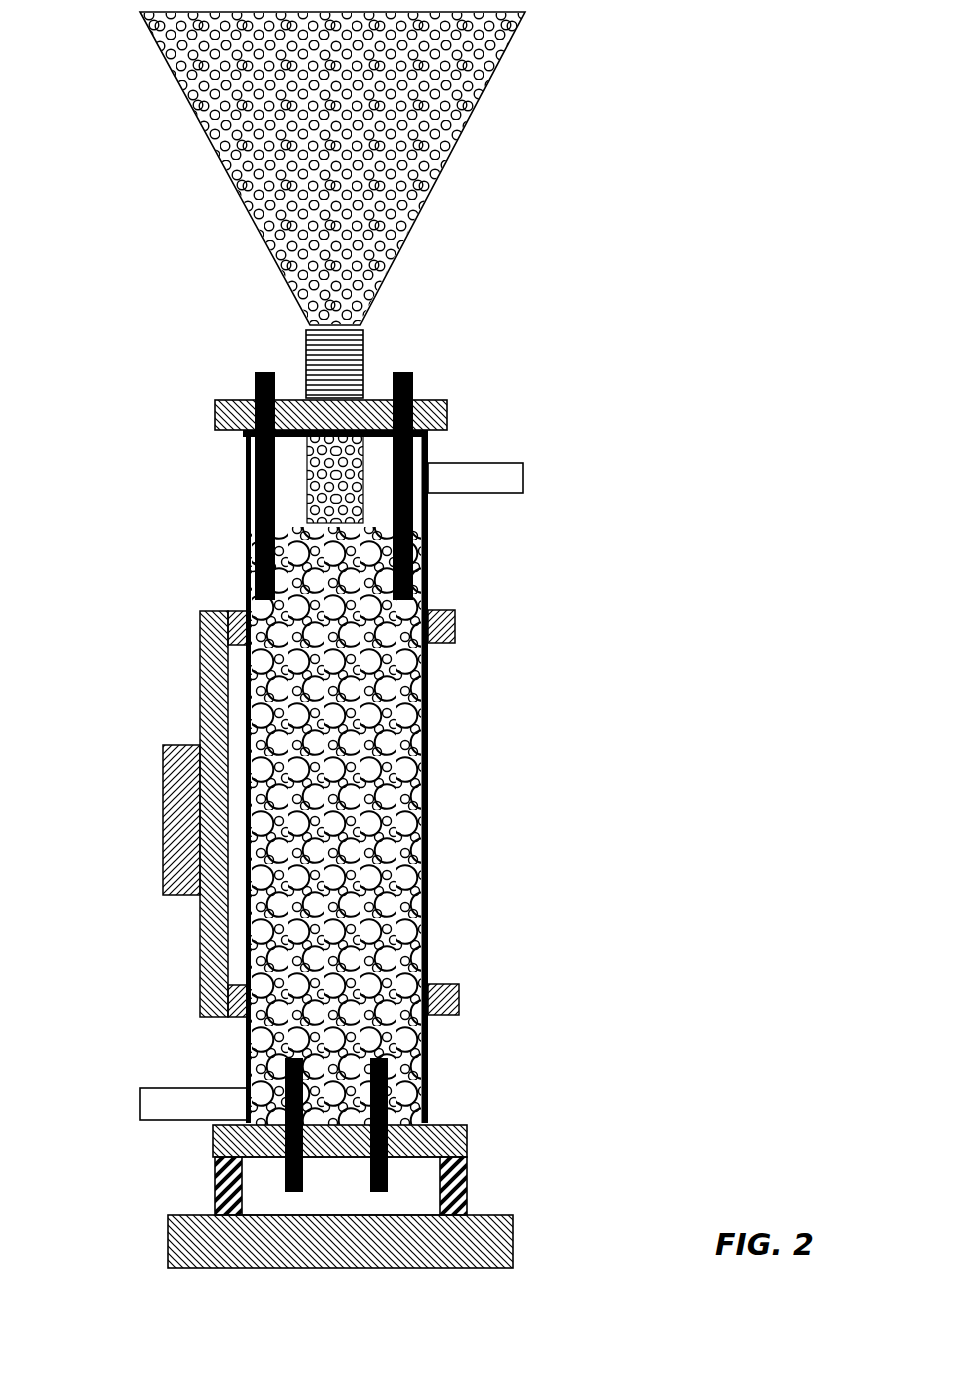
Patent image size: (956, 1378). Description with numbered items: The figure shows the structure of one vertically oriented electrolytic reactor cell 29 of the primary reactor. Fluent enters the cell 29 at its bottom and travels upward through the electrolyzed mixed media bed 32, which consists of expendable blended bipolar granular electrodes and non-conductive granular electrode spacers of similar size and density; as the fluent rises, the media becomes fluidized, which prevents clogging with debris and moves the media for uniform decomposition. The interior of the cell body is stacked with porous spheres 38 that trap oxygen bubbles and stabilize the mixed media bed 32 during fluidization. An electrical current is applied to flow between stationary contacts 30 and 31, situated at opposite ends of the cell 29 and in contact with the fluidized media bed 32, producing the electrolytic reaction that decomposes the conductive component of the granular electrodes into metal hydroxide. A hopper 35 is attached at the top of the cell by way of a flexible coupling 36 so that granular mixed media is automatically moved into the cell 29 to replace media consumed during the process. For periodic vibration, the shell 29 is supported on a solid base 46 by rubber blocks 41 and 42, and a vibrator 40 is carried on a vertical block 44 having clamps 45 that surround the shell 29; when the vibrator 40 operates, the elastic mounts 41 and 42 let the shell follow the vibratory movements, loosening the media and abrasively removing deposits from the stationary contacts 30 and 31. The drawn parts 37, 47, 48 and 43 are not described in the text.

The hopper 35 is at (462, 127).
The flexible coupling 36 is at (365, 345).
The stationary contact 31 is at (255, 383).
The gas inlet 37 is at (523, 478).
The feed column 47 is at (363, 509).
The clamps 45 is at (455, 625).
The vertical block 44 is at (214, 700).
The vibrator 40 is at (180, 797).
The electrolytic reactor cell 29 is at (428, 786).
The porous spheres 38 is at (383, 955).
The electrolyzed mixed media bed 32 is at (428, 1060).
The gas outlet 48 is at (140, 1103).
The solid base 46 is at (225, 1142).
The stationary contact 30 is at (215, 1175).
The rubber block 41 is at (228, 1196).
The rubber block 42 is at (465, 1188).
The base plate 43 is at (465, 1252).